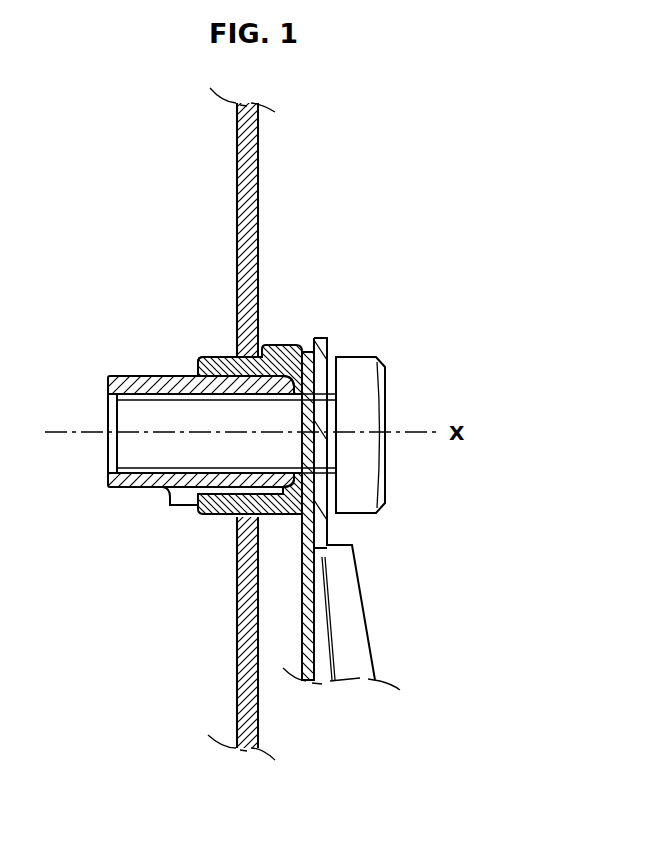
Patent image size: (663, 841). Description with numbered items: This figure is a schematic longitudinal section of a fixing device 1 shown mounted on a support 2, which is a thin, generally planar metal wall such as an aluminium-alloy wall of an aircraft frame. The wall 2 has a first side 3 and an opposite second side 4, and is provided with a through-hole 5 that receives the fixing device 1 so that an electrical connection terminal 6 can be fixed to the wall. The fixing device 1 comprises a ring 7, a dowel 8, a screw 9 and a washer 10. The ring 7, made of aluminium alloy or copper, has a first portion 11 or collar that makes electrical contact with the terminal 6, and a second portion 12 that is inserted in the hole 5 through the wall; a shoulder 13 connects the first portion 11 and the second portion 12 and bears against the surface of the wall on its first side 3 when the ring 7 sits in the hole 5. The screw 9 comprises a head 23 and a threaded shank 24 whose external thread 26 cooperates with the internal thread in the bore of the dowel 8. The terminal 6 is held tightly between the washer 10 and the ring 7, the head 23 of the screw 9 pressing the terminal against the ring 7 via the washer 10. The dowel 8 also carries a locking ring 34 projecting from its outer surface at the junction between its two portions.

The fixing device 1 is at (460, 330).
The support 2 is at (250, 152).
The first side 3 is at (258, 222).
The second side 4 is at (237, 221).
The through-hole 5 is at (236, 362).
The electrical connection terminal 6 is at (350, 640).
The ring 7 is at (288, 344).
The dowel 8 is at (132, 372).
The screw 9 is at (378, 416).
The washer 10 is at (332, 352).
The first portion 11 is at (290, 525).
The second portion 12 is at (215, 512).
The shoulder 13 is at (242, 525).
The head 23 is at (372, 456).
The threaded shank 24 is at (128, 448).
The external thread 26 is at (148, 470).
The locking ring 34 is at (200, 366).